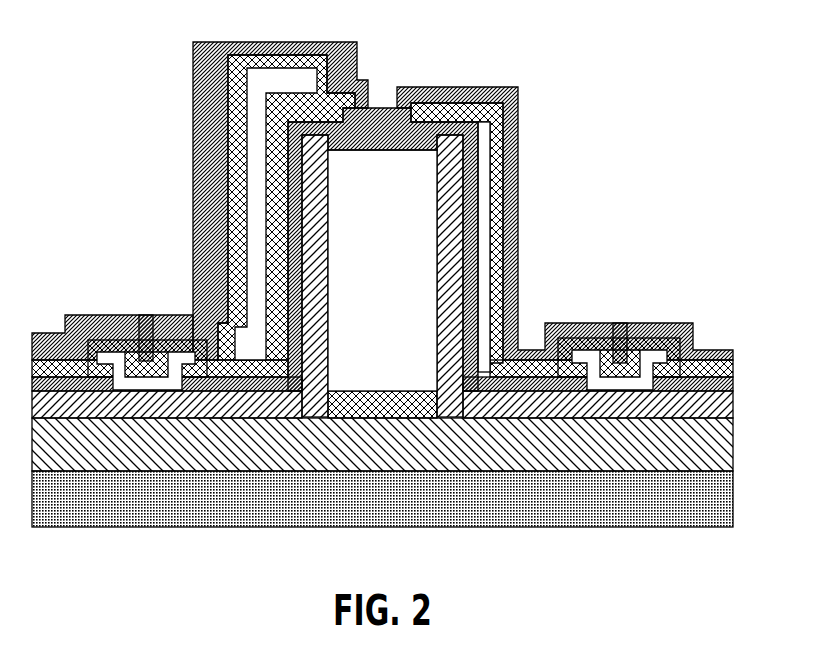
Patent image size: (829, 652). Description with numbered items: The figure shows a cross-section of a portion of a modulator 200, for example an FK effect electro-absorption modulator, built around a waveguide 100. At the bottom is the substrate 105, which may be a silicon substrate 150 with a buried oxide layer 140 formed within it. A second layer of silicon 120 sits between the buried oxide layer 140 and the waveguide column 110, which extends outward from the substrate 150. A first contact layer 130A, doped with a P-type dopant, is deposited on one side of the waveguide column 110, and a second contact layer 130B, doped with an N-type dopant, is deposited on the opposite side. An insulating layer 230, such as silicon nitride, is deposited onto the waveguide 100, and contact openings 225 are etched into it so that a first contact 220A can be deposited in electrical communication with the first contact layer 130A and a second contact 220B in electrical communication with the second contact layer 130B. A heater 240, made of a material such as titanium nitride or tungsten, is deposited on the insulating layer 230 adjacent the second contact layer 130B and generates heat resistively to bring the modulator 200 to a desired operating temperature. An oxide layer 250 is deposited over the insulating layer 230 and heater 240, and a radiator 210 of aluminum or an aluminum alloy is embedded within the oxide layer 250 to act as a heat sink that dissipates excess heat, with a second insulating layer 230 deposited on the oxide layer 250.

The waveguide 100 is at (425, 149).
The substrate 105 is at (382, 495).
The waveguide column 110 is at (394, 296).
The second layer of silicon 120 is at (382, 388).
The first contact layer 130A is at (358, 276).
The second contact layer 130B is at (410, 276).
The buried oxide layer 140 is at (397, 455).
The silicon substrate 150 is at (396, 508).
The modulator 200 is at (386, 286).
The radiator 210 is at (247, 180).
The first contact 220A is at (109, 336).
The second contact 220B is at (660, 335).
The contact openings 225 is at (382, 427).
The insulating layer 230 is at (382, 313).
The heater 240 is at (525, 242).
The oxide layer 250 is at (498, 233).